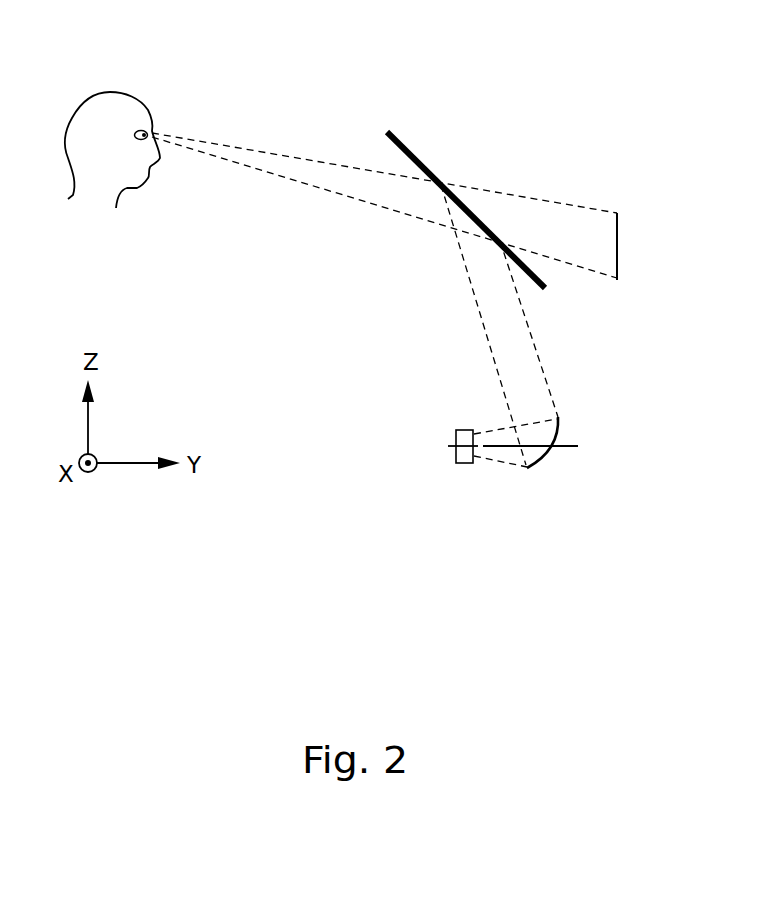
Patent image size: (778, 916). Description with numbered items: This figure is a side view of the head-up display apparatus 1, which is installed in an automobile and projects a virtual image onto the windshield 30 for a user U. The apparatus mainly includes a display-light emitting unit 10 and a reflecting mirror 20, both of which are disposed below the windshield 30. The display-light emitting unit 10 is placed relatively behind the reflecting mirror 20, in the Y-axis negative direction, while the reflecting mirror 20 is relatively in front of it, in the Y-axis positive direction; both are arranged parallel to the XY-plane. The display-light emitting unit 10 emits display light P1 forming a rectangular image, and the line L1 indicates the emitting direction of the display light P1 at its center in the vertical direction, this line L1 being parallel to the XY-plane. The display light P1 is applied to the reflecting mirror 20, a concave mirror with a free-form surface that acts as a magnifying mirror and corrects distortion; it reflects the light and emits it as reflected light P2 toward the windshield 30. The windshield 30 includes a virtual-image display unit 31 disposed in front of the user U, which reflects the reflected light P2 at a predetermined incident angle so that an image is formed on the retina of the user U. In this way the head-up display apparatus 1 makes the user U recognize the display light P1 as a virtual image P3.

The head-up display apparatus 1 is at (526, 600).
The display-light emitting unit 10 is at (456, 434).
The reflecting mirror 20 is at (557, 433).
The windshield 30 is at (413, 152).
The virtual-image display unit 31 is at (442, 224).
The line L1 is at (565, 448).
The display light P1 is at (497, 478).
The reflected light P2 is at (470, 352).
The virtual image P3 is at (617, 230).
The user U is at (110, 92).